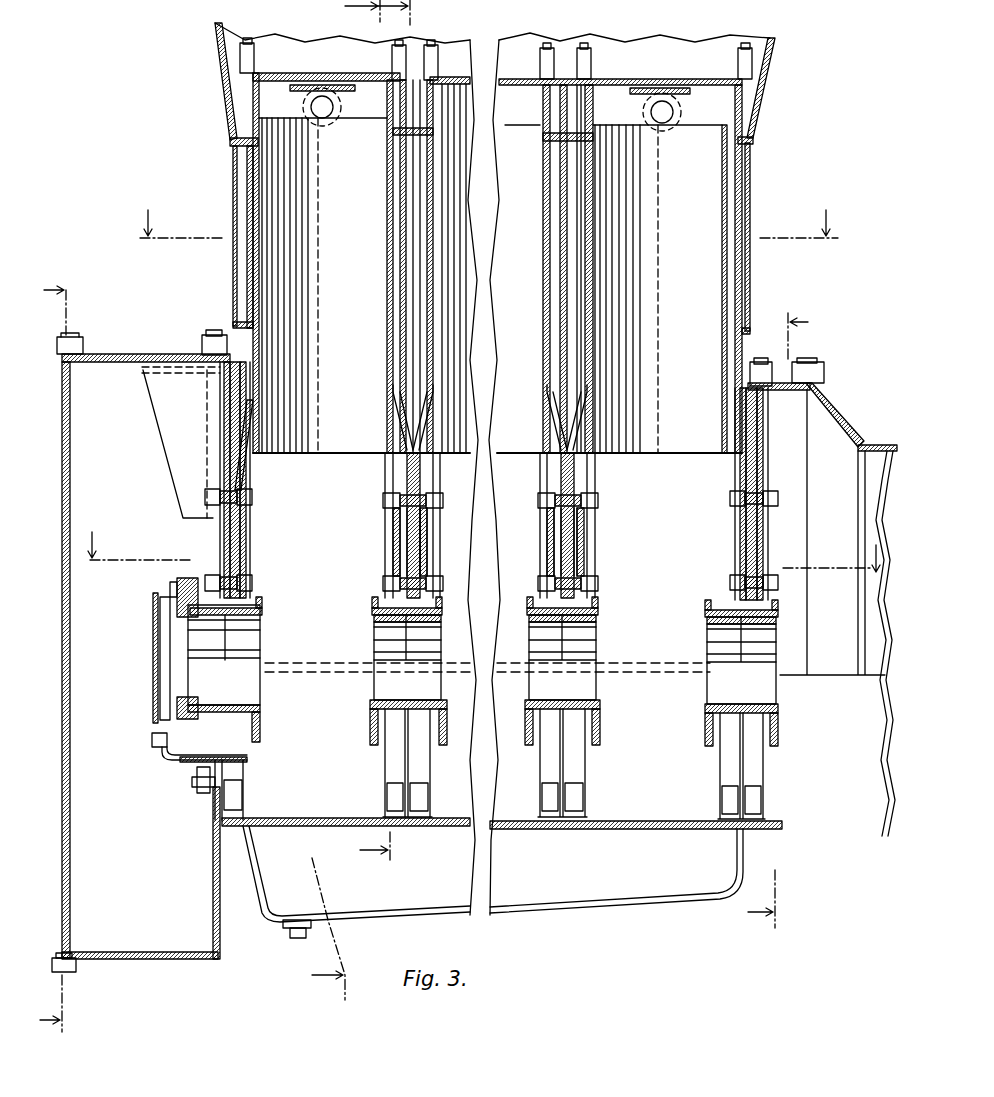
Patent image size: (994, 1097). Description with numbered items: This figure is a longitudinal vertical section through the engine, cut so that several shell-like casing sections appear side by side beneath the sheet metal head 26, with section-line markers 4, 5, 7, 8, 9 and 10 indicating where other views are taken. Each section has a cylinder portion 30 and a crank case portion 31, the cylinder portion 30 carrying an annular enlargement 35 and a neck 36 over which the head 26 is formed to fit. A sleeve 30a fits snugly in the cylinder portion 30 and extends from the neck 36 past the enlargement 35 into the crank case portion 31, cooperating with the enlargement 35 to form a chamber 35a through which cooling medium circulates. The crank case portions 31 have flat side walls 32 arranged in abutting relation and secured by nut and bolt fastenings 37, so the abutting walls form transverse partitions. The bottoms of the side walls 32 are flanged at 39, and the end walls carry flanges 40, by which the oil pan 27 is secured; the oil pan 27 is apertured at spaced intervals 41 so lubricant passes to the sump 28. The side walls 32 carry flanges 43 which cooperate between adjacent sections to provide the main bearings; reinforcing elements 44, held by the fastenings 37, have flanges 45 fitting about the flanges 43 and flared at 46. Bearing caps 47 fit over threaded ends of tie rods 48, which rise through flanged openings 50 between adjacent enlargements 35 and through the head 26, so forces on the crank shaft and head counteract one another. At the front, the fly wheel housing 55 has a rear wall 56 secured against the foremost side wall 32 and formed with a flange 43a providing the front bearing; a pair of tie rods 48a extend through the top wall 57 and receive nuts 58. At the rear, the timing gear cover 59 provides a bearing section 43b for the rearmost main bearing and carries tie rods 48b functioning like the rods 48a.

The head 26 is at (206, 48).
The annular enlargement 35 is at (233, 176).
The chamber 35a is at (246, 280).
The sleeve 30a is at (387, 230).
The neck 36 is at (393, 130).
The cylinder portion 30 is at (387, 350).
The flanged openings 50 is at (420, 385).
The crank case portion 31 is at (385, 474).
The side walls 32 is at (555, 475).
The nut and bolt fastenings 37 is at (390, 570).
The reinforcing elements 44 is at (550, 545).
The tie rods 48 is at (541, 528).
The tie rods 48a is at (218, 538).
The tie rods 48b is at (770, 540).
The flanges 45 is at (375, 605).
The flared portion 46 is at (462, 585).
The flanges 43 is at (375, 622).
The flange 43a is at (205, 628).
The bearing section 43b is at (770, 636).
The flanges 40 is at (341, 660).
The bearing caps 47 is at (371, 712).
The flanges 39 is at (385, 808).
The apertures 41 is at (305, 818).
The sump 28 is at (590, 906).
The oil pan 27 is at (805, 835).
The timing gear cover 59 is at (795, 418).
The top wall 57 is at (112, 363).
The nuts 58 is at (205, 345).
The fly wheel housing 55 is at (142, 960).
The rear wall 56 is at (213, 857).
The section line 4- 4 is at (346, 507).
The section line 5- 5 is at (392, 443).
The section line 7- 7 is at (480, 231).
The section line 8- 8 is at (480, 564).
The section line 9- 9 is at (64, 666).
The section line 10- 10 is at (778, 623).